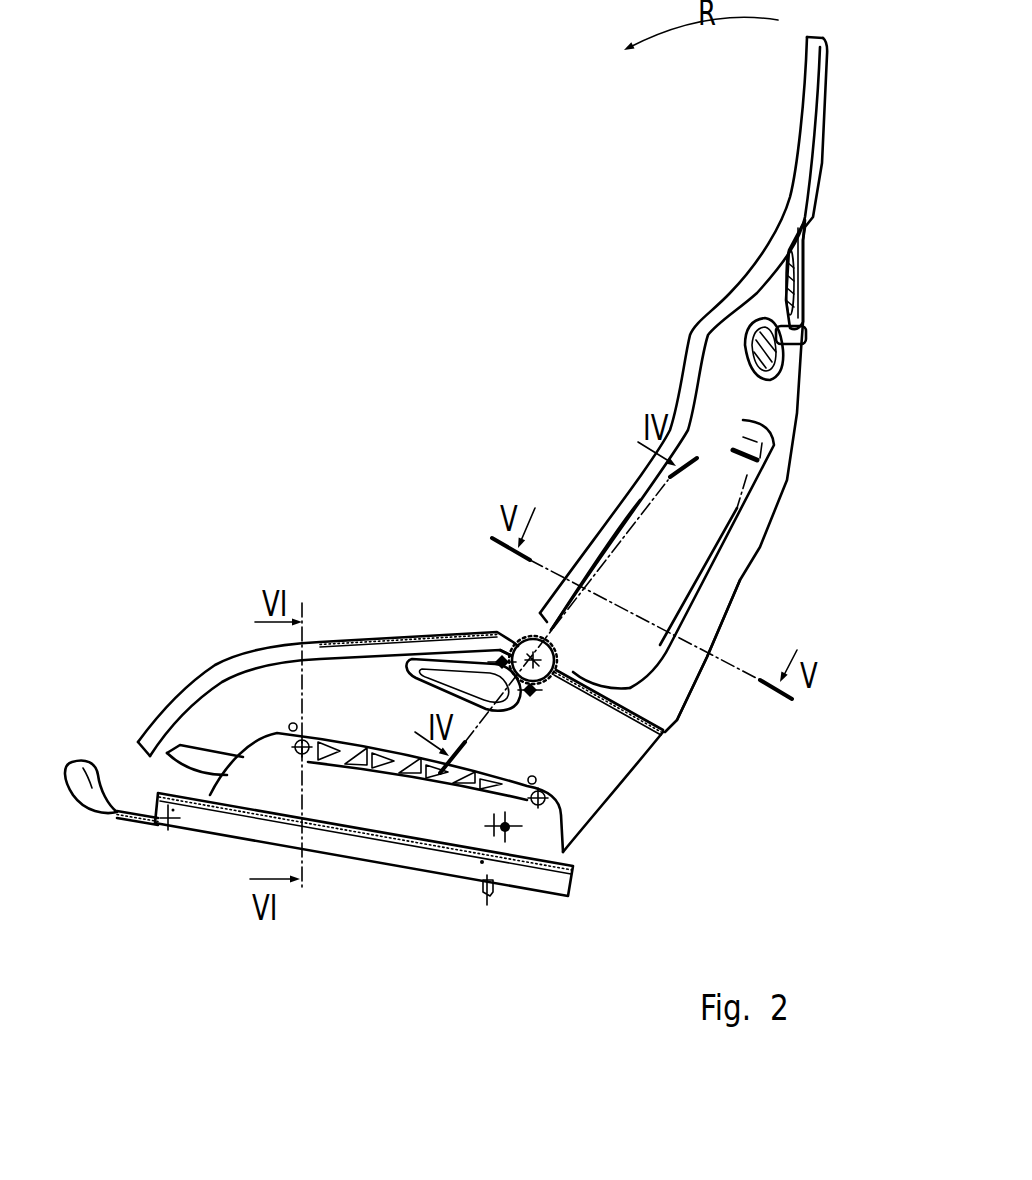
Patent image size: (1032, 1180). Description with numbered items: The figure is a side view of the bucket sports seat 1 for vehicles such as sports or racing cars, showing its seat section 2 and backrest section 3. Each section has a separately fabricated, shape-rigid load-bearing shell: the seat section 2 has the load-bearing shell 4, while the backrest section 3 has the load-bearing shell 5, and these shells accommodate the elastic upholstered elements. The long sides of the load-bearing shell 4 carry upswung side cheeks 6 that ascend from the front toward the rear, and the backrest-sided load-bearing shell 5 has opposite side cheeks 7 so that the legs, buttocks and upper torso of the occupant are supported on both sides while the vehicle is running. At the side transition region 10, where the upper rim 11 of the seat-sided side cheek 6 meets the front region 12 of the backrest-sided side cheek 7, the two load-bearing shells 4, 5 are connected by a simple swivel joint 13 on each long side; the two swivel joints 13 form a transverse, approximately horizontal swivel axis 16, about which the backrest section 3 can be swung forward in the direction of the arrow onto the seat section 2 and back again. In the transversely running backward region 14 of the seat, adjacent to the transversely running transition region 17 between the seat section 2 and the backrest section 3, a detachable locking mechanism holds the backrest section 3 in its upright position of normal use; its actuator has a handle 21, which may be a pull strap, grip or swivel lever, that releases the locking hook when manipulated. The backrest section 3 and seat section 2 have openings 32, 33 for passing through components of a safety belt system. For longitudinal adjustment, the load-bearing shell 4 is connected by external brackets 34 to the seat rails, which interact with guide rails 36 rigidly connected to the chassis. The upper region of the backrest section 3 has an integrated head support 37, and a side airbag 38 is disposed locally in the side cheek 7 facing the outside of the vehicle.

The bucket sports seat 1 is at (776, 385).
The seat section 2 is at (200, 685).
The backrest section 3 is at (673, 325).
The load-bearing shell 4 is at (330, 677).
The load-bearing shell 5 is at (713, 356).
The side cheek 6 is at (400, 646).
The side cheek 7 is at (627, 507).
The side transition region 10 is at (514, 618).
The upper rim 11 is at (373, 640).
The front region 12 is at (580, 556).
The swivel joint 13 is at (567, 655).
The backward region 14 is at (727, 698).
The swivel axis 16 is at (544, 684).
The transition region 17 is at (627, 761).
The handle 21 is at (808, 338).
The opening 32 is at (828, 274).
The opening 33 is at (457, 682).
The external bracket 34 is at (385, 812).
The guide rail 36 is at (217, 823).
The head support 37 is at (851, 56).
The side airbag 38 is at (683, 553).